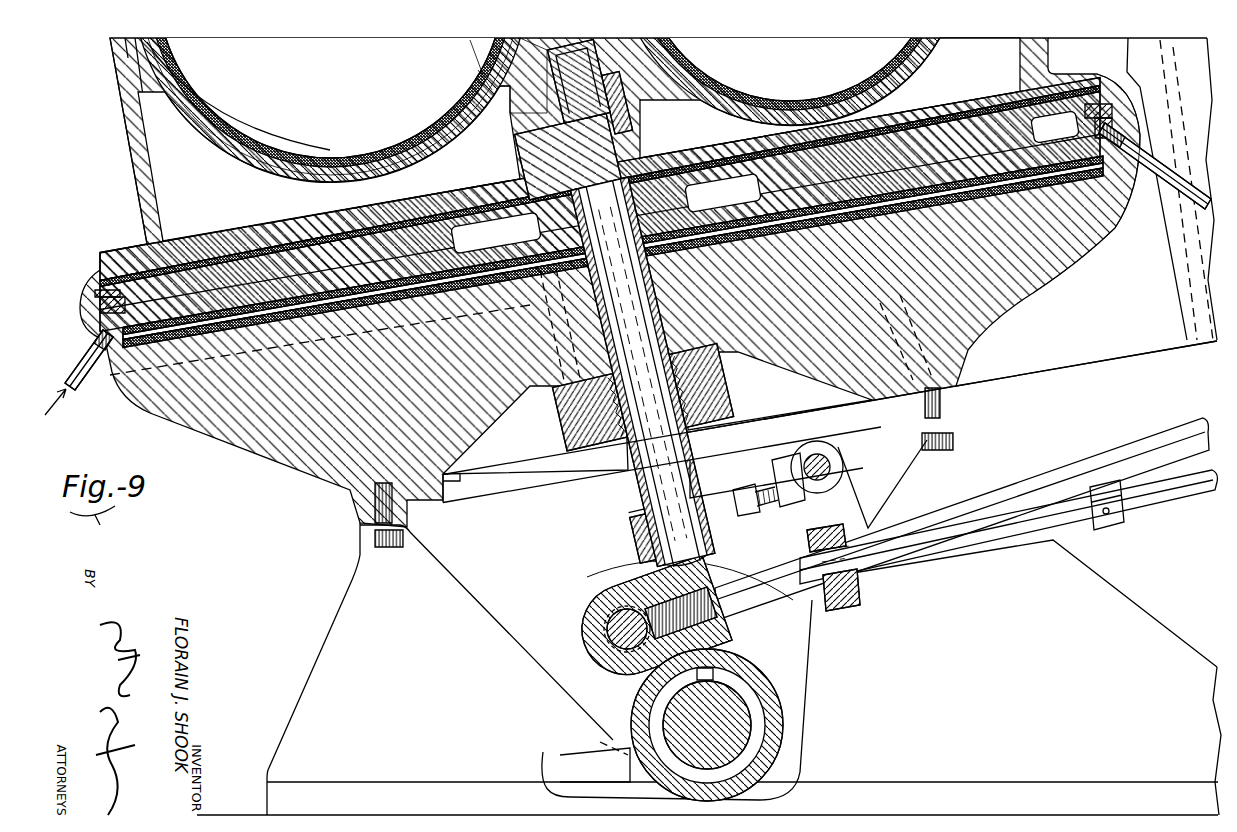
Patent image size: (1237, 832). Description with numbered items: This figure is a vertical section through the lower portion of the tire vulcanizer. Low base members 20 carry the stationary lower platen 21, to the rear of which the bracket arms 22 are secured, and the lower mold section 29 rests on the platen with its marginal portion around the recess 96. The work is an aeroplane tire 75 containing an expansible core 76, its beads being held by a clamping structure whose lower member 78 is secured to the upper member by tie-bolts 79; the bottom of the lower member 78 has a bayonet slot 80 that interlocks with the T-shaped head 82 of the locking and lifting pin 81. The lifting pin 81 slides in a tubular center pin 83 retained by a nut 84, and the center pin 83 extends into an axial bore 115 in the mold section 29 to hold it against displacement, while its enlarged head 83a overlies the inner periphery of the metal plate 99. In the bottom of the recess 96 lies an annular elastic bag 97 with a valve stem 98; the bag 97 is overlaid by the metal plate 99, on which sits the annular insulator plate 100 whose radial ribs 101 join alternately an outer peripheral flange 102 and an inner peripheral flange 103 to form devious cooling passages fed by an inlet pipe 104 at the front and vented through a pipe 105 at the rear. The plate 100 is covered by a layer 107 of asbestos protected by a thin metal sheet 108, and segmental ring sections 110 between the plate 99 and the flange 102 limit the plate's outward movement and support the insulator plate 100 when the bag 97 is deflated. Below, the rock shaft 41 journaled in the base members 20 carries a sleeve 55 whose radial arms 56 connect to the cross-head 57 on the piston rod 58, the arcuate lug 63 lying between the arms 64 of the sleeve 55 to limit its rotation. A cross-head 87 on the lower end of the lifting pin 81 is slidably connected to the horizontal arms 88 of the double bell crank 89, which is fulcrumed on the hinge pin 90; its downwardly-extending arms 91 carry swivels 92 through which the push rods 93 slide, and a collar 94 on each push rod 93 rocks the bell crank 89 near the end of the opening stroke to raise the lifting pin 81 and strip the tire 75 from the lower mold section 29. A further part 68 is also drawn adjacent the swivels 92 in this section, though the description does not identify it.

The standards or base members 20 is at (353, 607).
The lower platen 21 is at (297, 437).
The bracket arms 22 is at (1150, 48).
The lower mold section 29 is at (136, 165).
The rock shaft 41 is at (740, 738).
The sleeve 55 is at (767, 700).
The radial arms 56 is at (612, 672).
The cross-head 57 is at (604, 629).
The piston rod 58 is at (1077, 460).
The arcuate lug 63 is at (643, 575).
The arms 64 is at (543, 752).
The nut 68 is at (858, 597).
The aeroplane tire 75 is at (165, 64).
The expansible core 76 is at (240, 110).
The lower member 78 is at (490, 100).
The tie-bolts 79 is at (480, 55).
The bayonet slot 80 is at (480, 77).
The locking and lifting pin 81 is at (522, 172).
The T-shaped head 82 is at (703, 47).
The tubular center pin 83 is at (590, 385).
The enlarged head 83a is at (543, 223).
The nut 84 is at (723, 388).
The cross-head 87 is at (633, 523).
The horizontal arms 88 is at (730, 493).
The double bell crank 89 is at (768, 460).
The hinge pin 90 is at (830, 462).
The downwardly-extending arms 91 is at (882, 498).
The swivels 92 is at (808, 539).
The push rods 93 is at (1008, 545).
The collar 94 is at (1112, 525).
The recess 96 is at (1063, 260).
The annular elastic bag 97 is at (1033, 280).
The valve stem 98 is at (556, 395).
The metal plate 99 is at (1100, 237).
The annular insulator plate 100 is at (937, 137).
The radial ribs 101 is at (258, 265).
The outer peripheral flange 102 is at (1090, 112).
The inner peripheral flange 103 is at (688, 198).
The inlet pipe 104 is at (90, 377).
The pipe 105 is at (1198, 190).
The layer of heat insulating material 107 is at (300, 238).
The thin metal sheet 108 is at (378, 215).
The segmental ring sections 110 is at (1110, 128).
The axial bore 115 is at (637, 140).